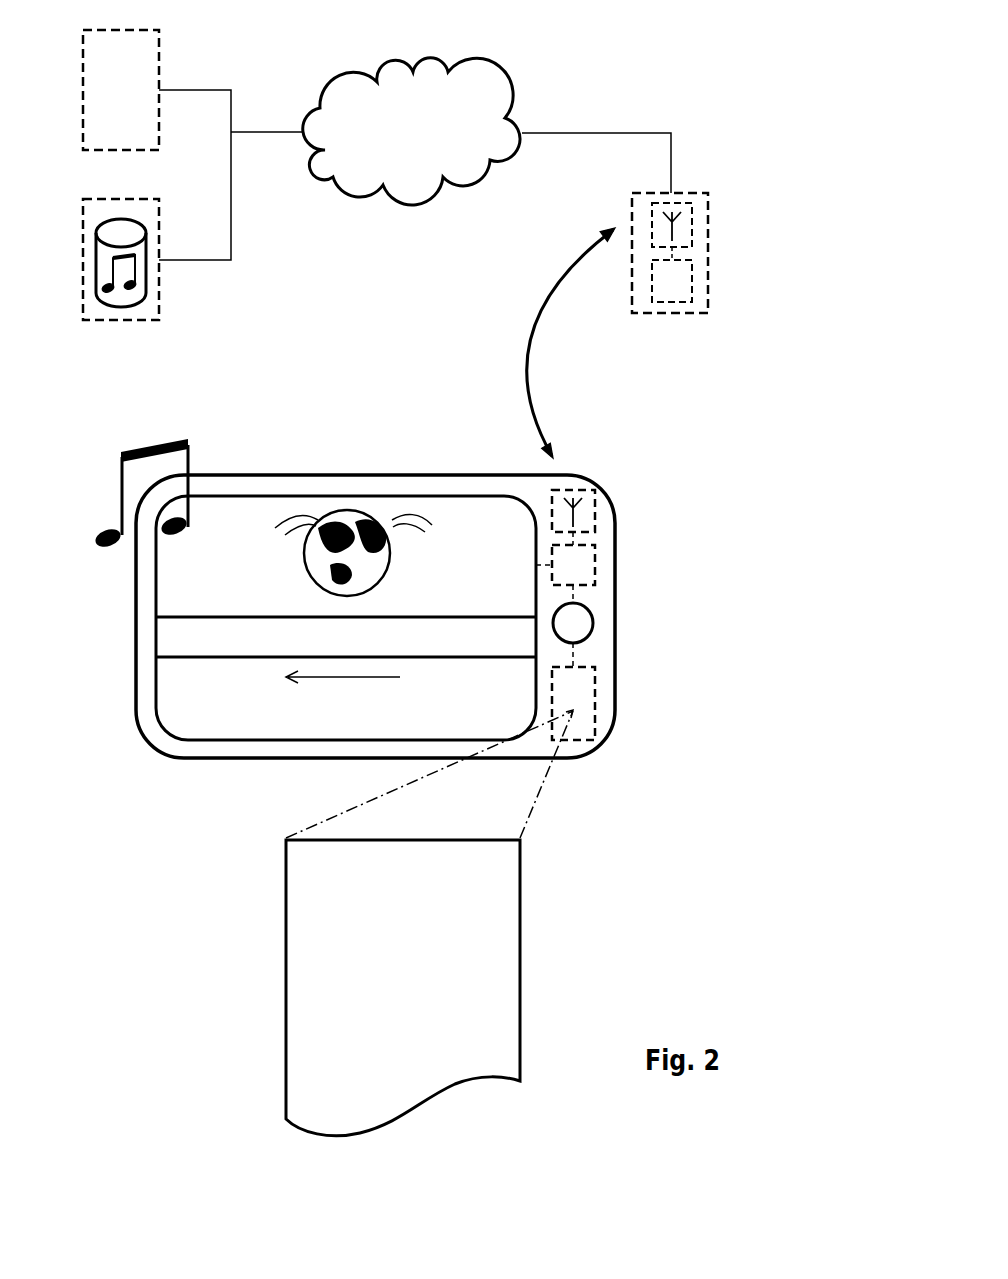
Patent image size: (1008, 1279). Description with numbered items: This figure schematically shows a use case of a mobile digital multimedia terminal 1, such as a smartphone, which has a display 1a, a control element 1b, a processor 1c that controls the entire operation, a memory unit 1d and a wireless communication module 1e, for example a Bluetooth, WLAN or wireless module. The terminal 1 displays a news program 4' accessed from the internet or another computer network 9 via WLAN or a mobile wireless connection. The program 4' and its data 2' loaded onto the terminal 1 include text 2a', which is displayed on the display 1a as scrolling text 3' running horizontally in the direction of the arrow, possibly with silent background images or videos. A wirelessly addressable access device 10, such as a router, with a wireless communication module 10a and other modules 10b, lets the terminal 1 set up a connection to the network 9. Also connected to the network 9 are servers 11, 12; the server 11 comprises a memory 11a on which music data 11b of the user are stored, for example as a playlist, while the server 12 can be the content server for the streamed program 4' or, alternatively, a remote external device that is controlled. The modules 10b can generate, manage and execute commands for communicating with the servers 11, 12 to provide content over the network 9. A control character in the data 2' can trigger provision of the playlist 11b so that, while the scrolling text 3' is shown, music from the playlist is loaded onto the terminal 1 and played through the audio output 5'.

The mobile digital multimedia terminal 1 is at (240, 795).
The display 1a is at (172, 710).
The control element 1b is at (594, 623).
The processor 1c is at (595, 565).
The memory unit 1d is at (595, 705).
The wireless communication module 1e is at (595, 510).
The data 2' is at (477, 988).
The text 2a' is at (469, 944).
The scrolling text 3' is at (341, 745).
The news program 4' is at (353, 508).
The audio output 5' is at (119, 546).
The network 9 is at (410, 163).
The access device 10 is at (627, 211).
The wireless communication module 10a is at (652, 227).
The other modules 10b is at (687, 277).
The server 11 is at (160, 303).
The memory 11a is at (121, 306).
The music data 11b is at (102, 272).
The server 12 is at (135, 60).